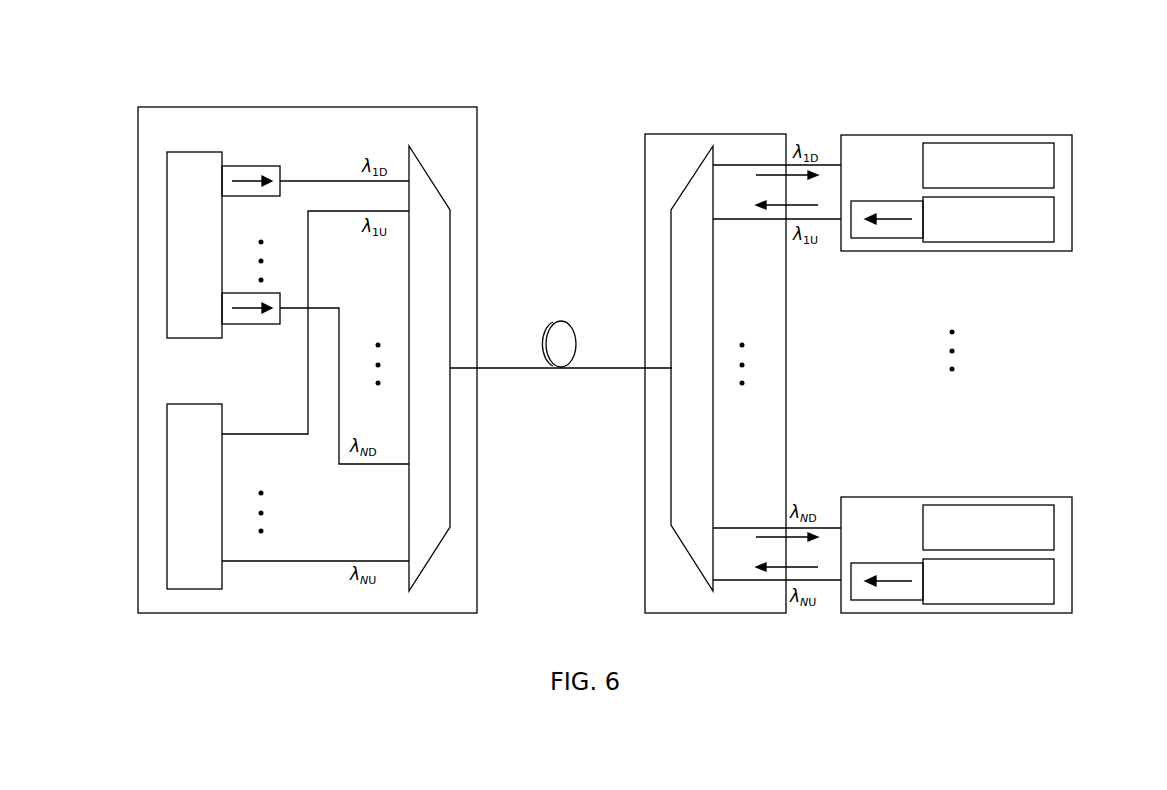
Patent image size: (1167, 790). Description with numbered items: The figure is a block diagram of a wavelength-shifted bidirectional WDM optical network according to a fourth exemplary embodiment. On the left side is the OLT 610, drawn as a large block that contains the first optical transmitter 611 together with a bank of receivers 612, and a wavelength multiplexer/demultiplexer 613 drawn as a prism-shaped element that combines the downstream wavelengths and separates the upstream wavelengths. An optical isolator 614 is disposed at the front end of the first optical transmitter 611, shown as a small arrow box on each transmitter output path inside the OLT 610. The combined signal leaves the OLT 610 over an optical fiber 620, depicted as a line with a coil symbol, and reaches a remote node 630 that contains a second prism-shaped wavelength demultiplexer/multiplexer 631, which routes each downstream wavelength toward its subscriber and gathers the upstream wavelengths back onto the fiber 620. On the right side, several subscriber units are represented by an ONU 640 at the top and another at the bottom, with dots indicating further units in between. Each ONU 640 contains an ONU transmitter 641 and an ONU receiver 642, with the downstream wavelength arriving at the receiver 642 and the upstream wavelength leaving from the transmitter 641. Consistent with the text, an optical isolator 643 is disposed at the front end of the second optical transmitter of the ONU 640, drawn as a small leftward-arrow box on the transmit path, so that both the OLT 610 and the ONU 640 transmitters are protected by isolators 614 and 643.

The OLT 610 is at (386, 107).
The first optical transmitter 611 is at (194, 152).
The receivers (Rx's) 612 is at (196, 589).
The wavelength multiplexer/demultiplexer 613 is at (430, 182).
The optical isolator 614 is at (250, 166).
The optical fiber 620 is at (562, 321).
The remote node 630 is at (740, 134).
The wavelength demultiplexer/multiplexer 631 is at (697, 170).
The ONU 640 is at (983, 135).
The ONU transmitter (ONU-Tx) 641 is at (1054, 219).
The ONU receiver (ONU-Rx) 642 is at (1072, 165).
The optical isolator 643 is at (876, 238).